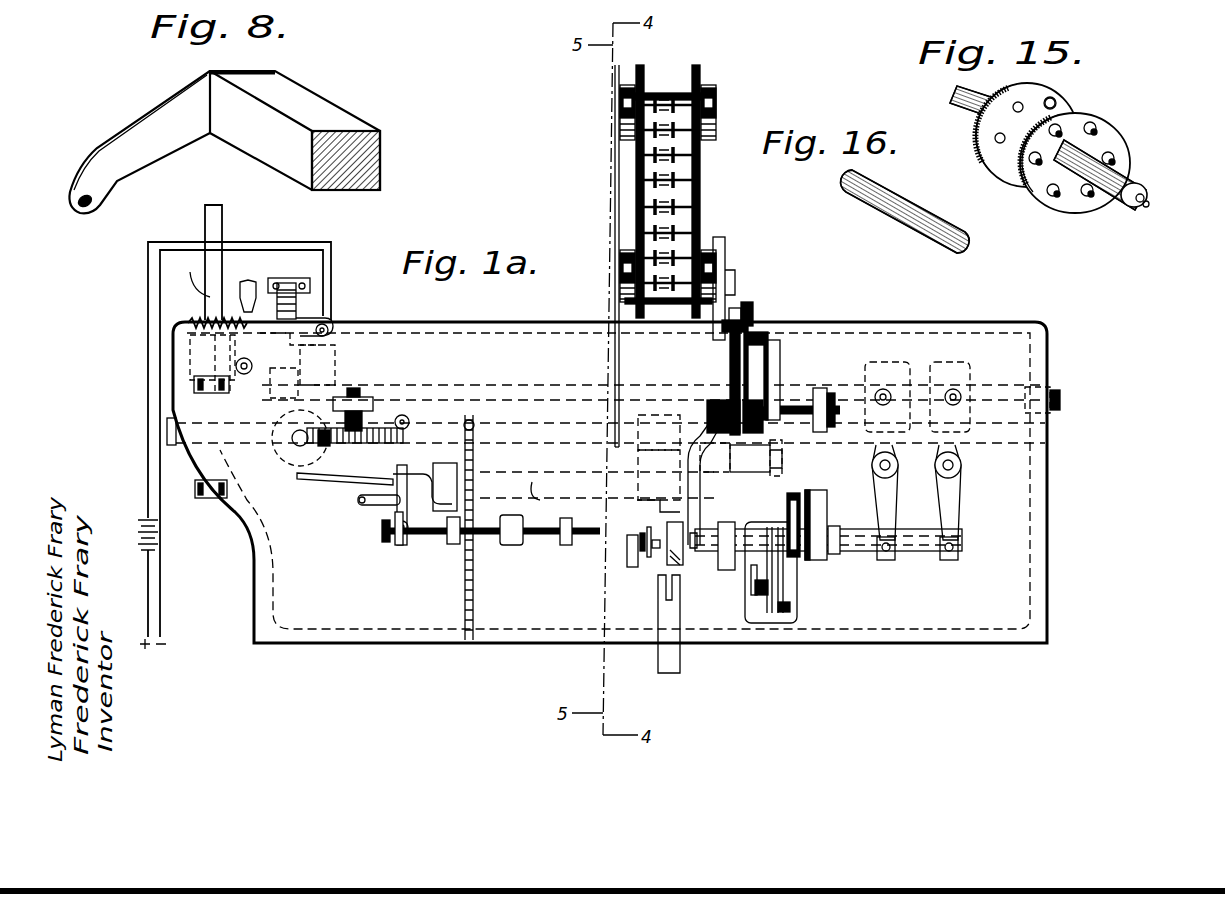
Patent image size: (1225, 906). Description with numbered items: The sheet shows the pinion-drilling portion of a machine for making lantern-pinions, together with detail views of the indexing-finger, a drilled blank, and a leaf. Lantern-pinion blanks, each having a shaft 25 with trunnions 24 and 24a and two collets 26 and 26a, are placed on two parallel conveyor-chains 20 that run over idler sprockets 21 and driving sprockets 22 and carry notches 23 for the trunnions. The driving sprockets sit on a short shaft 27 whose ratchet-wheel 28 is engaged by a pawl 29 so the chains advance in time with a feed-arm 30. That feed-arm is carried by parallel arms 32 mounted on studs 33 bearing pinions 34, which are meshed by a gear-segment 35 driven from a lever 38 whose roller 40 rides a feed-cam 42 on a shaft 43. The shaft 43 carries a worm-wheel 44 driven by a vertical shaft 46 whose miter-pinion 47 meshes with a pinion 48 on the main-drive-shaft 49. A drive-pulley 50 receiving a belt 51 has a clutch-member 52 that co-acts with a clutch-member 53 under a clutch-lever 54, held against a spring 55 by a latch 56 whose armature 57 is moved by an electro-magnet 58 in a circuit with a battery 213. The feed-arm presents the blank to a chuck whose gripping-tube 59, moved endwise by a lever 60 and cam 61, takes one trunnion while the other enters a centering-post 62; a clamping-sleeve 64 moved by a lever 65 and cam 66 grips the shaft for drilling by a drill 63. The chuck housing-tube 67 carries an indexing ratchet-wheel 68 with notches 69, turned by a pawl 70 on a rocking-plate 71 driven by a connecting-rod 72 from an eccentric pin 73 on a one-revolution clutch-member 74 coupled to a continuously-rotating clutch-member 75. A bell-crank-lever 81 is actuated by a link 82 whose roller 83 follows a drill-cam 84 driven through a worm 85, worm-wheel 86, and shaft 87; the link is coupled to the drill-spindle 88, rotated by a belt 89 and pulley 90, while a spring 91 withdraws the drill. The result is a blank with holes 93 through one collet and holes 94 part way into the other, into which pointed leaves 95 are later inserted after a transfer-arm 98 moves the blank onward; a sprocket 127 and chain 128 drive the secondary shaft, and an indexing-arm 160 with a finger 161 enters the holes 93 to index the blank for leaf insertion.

In FIG. 8, the indexing-arm 160 is at (130, 140).
In FIG. 8, the finger 161 is at (82, 208).
In FIG. 15, the trunnion 24a is at (955, 92).
In FIG. 1A, the trunnion 24a is at (665, 190).
In FIG. 15, the collet 26a is at (982, 143).
In FIG. 1A, the collet 26a is at (680, 180).
In FIG. 15, the collet 26 is at (1072, 210).
In FIG. 1A, the collet 26 is at (650, 228).
In FIG. 15, the holes 93 is at (1098, 128).
In FIG. 15, the holes 94 is at (1055, 104).
In FIG. 15, the shaft 25 is at (1130, 172).
In FIG. 1A, the shaft 25 is at (680, 160).
In FIG. 15, the trunnion 24 is at (1150, 200).
In FIG. 1A, the trunnion 24 is at (648, 135).
In FIG. 16, the leaves 95 is at (905, 232).
In FIG. 1A, the conveyor-chains 20 is at (641, 68).
In FIG. 1A, the idler sprocket 21 is at (636, 92).
In FIG. 1A, the driving sprocket 22 is at (720, 260).
In FIG. 1A, the notches 23 is at (690, 150).
In FIG. 1A, the short shaft 27 is at (665, 290).
In FIG. 1A, the ratchet-wheel 28 is at (727, 265).
In FIG. 1A, the pawl 29 is at (705, 340).
In FIG. 1A, the feed-arm 30 is at (662, 552).
In FIG. 1A, the parallel arms 32 is at (688, 463).
In FIG. 1A, the studs 33 is at (806, 400).
In FIG. 1A, the pinions 34 is at (780, 390).
In FIG. 1A, the gear-segment 35 is at (770, 360).
In FIG. 1A, the lever 38 is at (742, 310).
In FIG. 1A, the roller 40 is at (754, 312).
In FIG. 1A, the feed-cam 42 is at (752, 330).
In FIG. 1A, the shaft 43 is at (520, 384).
In FIG. 1A, the worm-wheel 44 is at (335, 362).
In FIG. 1A, the vertical shaft 46 is at (300, 448).
In FIG. 1A, the miter-pinion 47 is at (278, 455).
In FIG. 1A, the pinion 48 is at (335, 486).
In FIG. 1A, the main-drive-shaft 49 is at (525, 441).
In FIG. 1A, the drive-pulley 50 is at (205, 498).
In FIG. 1A, the belt 51 is at (192, 280).
In FIG. 1A, the clutch-member 52 is at (228, 440).
In FIG. 1A, the clutch-member 53 is at (248, 378).
In FIG. 1A, the clutch-lever 54 is at (210, 350).
In FIG. 1A, the spring 55 is at (216, 318).
In FIG. 1A, the latch 56 is at (340, 324).
In FIG. 1A, the armature 57 is at (328, 322).
In FIG. 1A, the electro-magnet 58 is at (287, 283).
In FIG. 1A, the gripping-tube 59 is at (683, 560).
In FIG. 1A, the lever 60 is at (950, 492).
In FIG. 1A, the cam 61 is at (968, 368).
In FIG. 1A, the centering-post 62 is at (626, 550).
In FIG. 1A, the drill 63 is at (622, 545).
In FIG. 1A, the clamping-sleeve 64 is at (700, 533).
In FIG. 1A, the lever 65 is at (890, 508).
In FIG. 1A, the cam 66 is at (905, 368).
In FIG. 1A, the housing-tube 67 is at (852, 552).
In FIG. 1A, the indexing ratchet-wheel 68 is at (790, 590).
In FIG. 1A, the notches 69 is at (792, 560).
In FIG. 1A, the pawl 70 is at (780, 615).
In FIG. 1A, the rocking-plate 71 is at (770, 612).
In FIG. 1A, the connecting-rod 72 is at (756, 598).
In FIG. 1A, the eccentric pin 73 is at (778, 455).
In FIG. 1A, the clutch-member 74 is at (800, 478).
In FIG. 1A, the clutch-member 75 is at (700, 410).
In FIG. 1A, the bell-crank-lever 81 is at (655, 510).
In FIG. 1A, the link 82 is at (538, 478).
In FIG. 1A, the roller 83 is at (398, 490).
In FIG. 1A, the drill-cam 84 is at (310, 486).
In FIG. 1A, the worm 85 is at (322, 447).
In FIG. 1A, the worm-wheel 86 is at (405, 420).
In FIG. 1A, the shaft 87 is at (365, 410).
In FIG. 1A, the drill-spindle 88 is at (426, 540).
In FIG. 1A, the belt 89 is at (507, 548).
In FIG. 1A, the pulley 90 is at (507, 545).
In FIG. 1A, the spring 91 is at (385, 505).
In FIG. 1A, the transfer-arm 98 is at (658, 655).
In FIG. 1A, the sprocket 127 is at (471, 432).
In FIG. 1A, the chain 128 is at (466, 618).
In FIG. 1A, the battery 213 is at (140, 534).